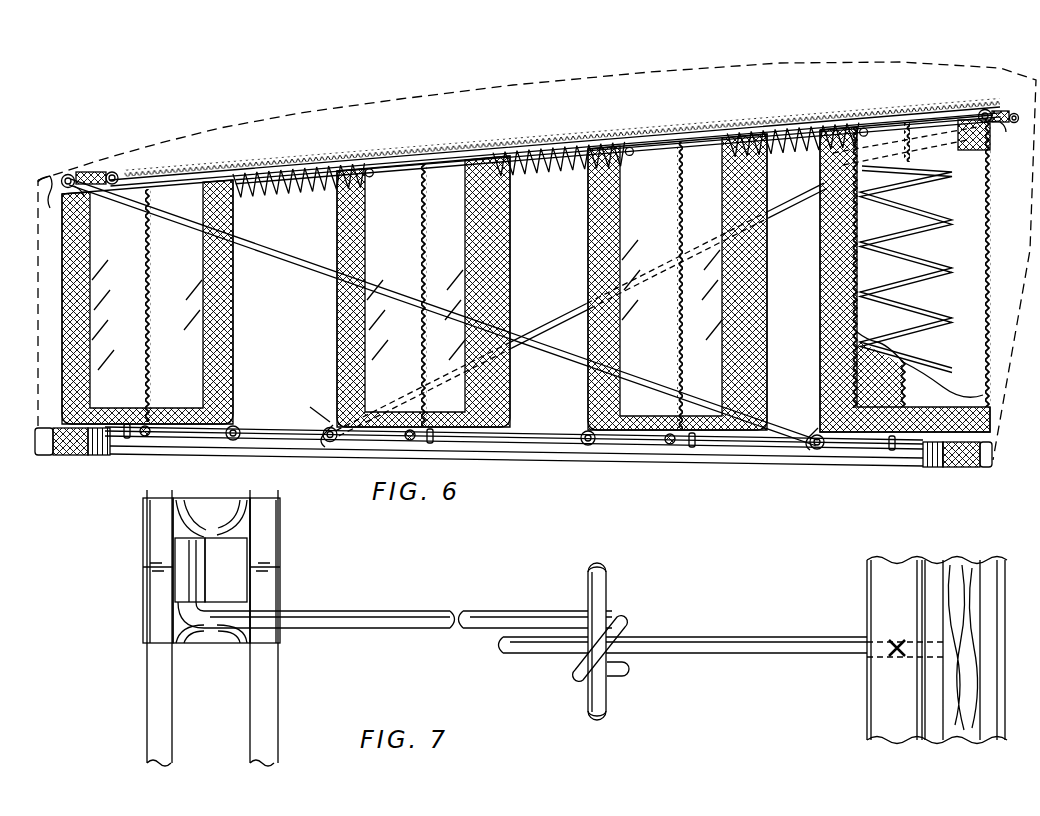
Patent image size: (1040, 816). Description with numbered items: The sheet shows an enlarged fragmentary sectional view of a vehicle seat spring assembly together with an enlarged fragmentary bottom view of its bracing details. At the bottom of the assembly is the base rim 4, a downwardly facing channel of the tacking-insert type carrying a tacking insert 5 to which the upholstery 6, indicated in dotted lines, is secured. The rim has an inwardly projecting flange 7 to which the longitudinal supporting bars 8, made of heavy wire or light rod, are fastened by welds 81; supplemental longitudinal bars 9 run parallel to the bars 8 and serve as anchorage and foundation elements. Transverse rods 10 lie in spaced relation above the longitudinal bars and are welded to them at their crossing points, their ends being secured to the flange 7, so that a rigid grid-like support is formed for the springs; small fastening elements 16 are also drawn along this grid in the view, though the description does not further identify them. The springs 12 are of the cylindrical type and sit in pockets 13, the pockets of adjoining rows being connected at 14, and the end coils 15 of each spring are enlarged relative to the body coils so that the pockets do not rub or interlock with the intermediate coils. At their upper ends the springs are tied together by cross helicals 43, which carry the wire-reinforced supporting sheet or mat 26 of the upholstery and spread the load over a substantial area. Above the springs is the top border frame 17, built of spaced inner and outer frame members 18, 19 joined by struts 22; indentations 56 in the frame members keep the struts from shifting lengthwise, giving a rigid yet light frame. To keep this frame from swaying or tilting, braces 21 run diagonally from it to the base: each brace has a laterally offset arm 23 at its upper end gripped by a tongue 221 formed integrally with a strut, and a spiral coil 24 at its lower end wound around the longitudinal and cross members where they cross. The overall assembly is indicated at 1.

In FIG. 6, the mattress assembly 1 is at (34, 305).
In FIG. 6, the base rim 4 is at (36, 447).
In FIG. 7, the base rim 4 is at (993, 567).
In FIG. 6, the tacking insert 5 is at (66, 456).
In FIG. 7, the tacking insert 5 is at (950, 587).
In FIG. 6, the upholstery 6 is at (306, 108).
In FIG. 6, the inwardly projecting flange 7 is at (100, 452).
In FIG. 7, the inwardly projecting flange 7 is at (877, 582).
In FIG. 6, the longitudinal supporting bar 8 is at (150, 442).
In FIG. 6, the supplemental longitudinal bar 9 is at (325, 442).
In FIG. 7, the supplemental longitudinal bar 9 is at (603, 575).
In FIG. 6, the transverse rod 10 is at (530, 434).
In FIG. 7, the transverse rod 10 is at (757, 646).
In FIG. 6, the spring 12 is at (938, 215).
In FIG. 6, the pocket 13 is at (240, 345).
In FIG. 6, the pocket connection 14 is at (155, 375).
In FIG. 6, the end coil 15 is at (885, 145).
In FIG. 6, the peg 16 is at (245, 420).
In FIG. 6, the top border frame 17 is at (115, 171).
In FIG. 7, the top border frame 17 is at (146, 686).
In FIG. 6, the inner frame member 18 is at (104, 172).
In FIG. 7, the inner frame member 18 is at (250, 720).
In FIG. 6, the outer frame member 19 is at (62, 178).
In FIG. 7, the outer frame member 19 is at (153, 723).
In FIG. 6, the brace 21 is at (290, 244).
In FIG. 7, the brace 21 is at (382, 615).
In FIG. 6, the strut 22 is at (70, 172).
In FIG. 7, the strut 22 is at (277, 590).
In FIG. 7, the laterally offset arm 23 is at (187, 607).
In FIG. 6, the spiral coil 24 is at (333, 448).
In FIG. 7, the spiral coil 24 is at (617, 620).
In FIG. 6, the supporting sheet 26 is at (585, 128).
In FIG. 6, the cross helical 43 is at (330, 162).
In FIG. 7, the indentation 56 is at (163, 560).
In FIG. 7, the weld 81 is at (900, 657).
In FIG. 6, the tongue 221 is at (78, 190).
In FIG. 7, the tongue 221 is at (183, 582).